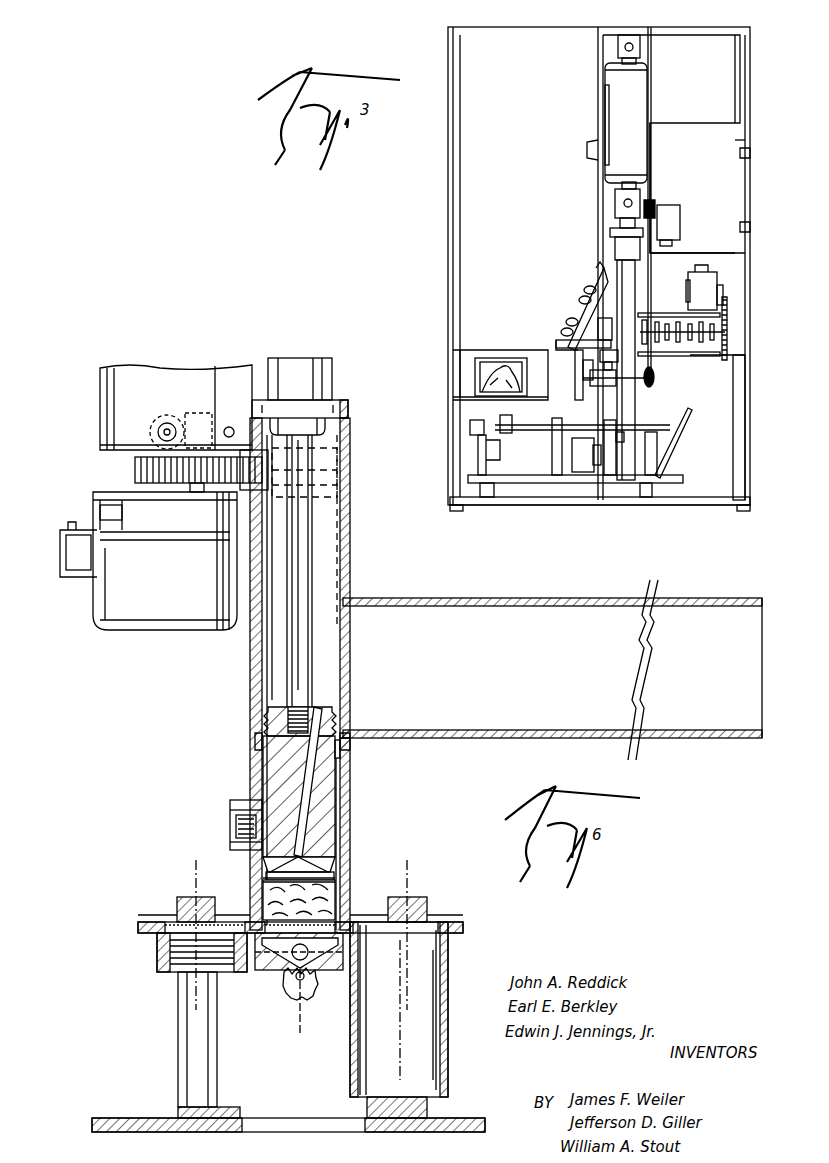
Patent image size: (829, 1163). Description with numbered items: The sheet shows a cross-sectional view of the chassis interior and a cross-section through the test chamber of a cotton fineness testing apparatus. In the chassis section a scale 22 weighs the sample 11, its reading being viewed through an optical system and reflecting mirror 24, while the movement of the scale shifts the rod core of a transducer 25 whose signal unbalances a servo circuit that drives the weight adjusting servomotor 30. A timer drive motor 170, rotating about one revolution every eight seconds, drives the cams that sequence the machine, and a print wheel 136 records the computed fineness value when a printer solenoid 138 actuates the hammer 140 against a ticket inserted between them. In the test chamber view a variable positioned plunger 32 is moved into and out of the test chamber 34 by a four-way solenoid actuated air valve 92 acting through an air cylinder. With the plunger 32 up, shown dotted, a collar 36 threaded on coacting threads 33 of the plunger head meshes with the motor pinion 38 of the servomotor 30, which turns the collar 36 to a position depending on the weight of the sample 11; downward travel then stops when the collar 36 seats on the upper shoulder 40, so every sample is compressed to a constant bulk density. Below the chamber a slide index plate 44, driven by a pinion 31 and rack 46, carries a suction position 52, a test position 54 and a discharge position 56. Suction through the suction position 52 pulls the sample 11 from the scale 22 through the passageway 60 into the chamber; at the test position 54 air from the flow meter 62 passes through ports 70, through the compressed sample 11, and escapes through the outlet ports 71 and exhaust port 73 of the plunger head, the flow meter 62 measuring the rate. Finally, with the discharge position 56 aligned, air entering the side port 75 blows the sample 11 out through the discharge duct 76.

In FIG. 3, the sample 11 is at (495, 368).
In FIG. 6, the sample 11 is at (322, 893).
In FIG. 3, the scale 22 is at (455, 396).
In FIG. 3, the reflecting mirror 24 is at (688, 415).
In FIG. 3, the transducer 25 is at (653, 432).
In FIG. 6, the weight adjusting servomotor 30 is at (95, 592).
In FIG. 6, the pinion 31 is at (283, 983).
In FIG. 6, the variable positioned plunger 32 is at (340, 556).
In FIG. 6, the coacting threads 33 is at (335, 718).
In FIG. 6, the test chamber 34 is at (348, 814).
In FIG. 6, the collar 36 is at (340, 478).
In FIG. 6, the motor pinion 38 is at (135, 468).
In FIG. 6, the upper shoulder 40 is at (350, 748).
In FIG. 3, the slide index plate 44 is at (735, 140).
In FIG. 6, the slide index plate 44 is at (462, 928).
In FIG. 6, the rack 46 is at (252, 960).
In FIG. 6, the suction position 52 is at (200, 972).
In FIG. 6, the test position 54 is at (294, 1010).
In FIG. 6, the discharge position 56 is at (400, 975).
In FIG. 6, the passageway 60 is at (497, 736).
In FIG. 3, the flow meter 62 is at (650, 74).
In FIG. 6, the ports 70 is at (318, 917).
In FIG. 6, the outlet ports 71 is at (340, 856).
In FIG. 6, the exhaust port 73 is at (312, 780).
In FIG. 6, the side port 75 is at (230, 824).
In FIG. 6, the discharge duct 76 is at (255, 1118).
In FIG. 6, the four-way solenoid actuated air valve 92 is at (293, 358).
In FIG. 3, the print wheel 136 is at (575, 400).
In FIG. 3, the printer solenoid 138 is at (600, 315).
In FIG. 3, the hammer 140 is at (578, 344).
In FIG. 3, the timer drive motor 170 is at (697, 270).